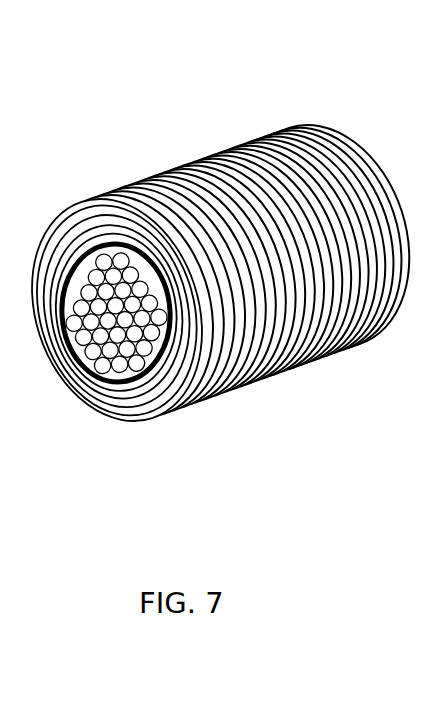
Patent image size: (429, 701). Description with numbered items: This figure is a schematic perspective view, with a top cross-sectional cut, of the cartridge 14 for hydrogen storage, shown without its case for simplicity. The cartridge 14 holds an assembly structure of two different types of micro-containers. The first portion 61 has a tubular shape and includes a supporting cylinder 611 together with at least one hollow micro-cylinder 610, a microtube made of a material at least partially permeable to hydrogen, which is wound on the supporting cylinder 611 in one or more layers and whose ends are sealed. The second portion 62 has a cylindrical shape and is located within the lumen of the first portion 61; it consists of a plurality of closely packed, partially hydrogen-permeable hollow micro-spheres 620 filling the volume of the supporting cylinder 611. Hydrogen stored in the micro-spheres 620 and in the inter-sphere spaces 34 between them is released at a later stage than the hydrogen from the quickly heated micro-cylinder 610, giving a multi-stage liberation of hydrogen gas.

The cartridge 14 is at (216, 280).
The first portion 61 is at (52, 212).
The micro-cylinder 610 is at (262, 153).
The supporting cylinder 611 is at (118, 242).
The second portion 62 is at (152, 392).
The micro-spheres 620 is at (117, 373).
The inter-sphere spaces 34 is at (131, 378).